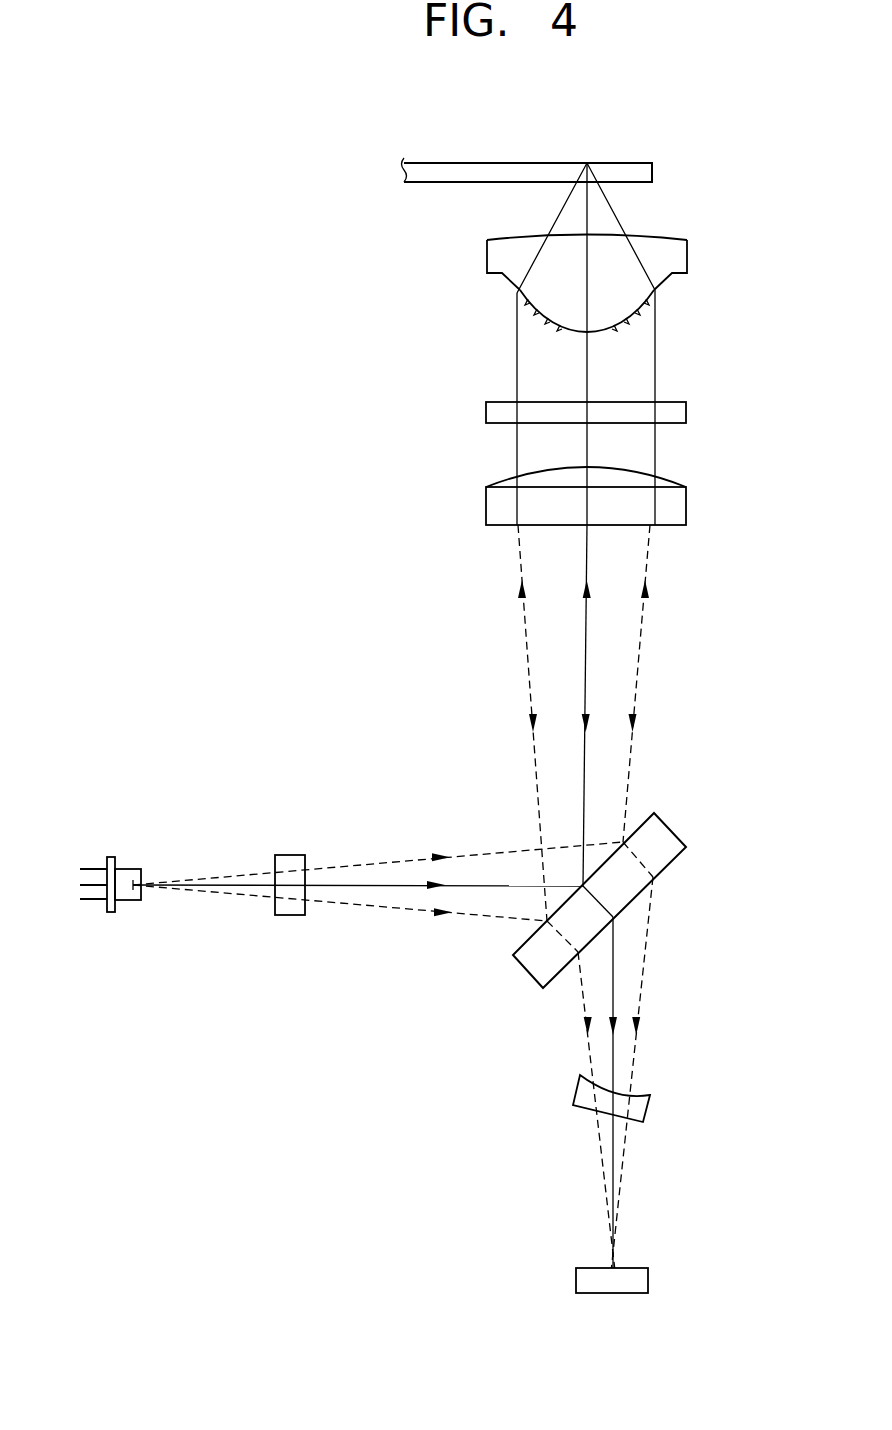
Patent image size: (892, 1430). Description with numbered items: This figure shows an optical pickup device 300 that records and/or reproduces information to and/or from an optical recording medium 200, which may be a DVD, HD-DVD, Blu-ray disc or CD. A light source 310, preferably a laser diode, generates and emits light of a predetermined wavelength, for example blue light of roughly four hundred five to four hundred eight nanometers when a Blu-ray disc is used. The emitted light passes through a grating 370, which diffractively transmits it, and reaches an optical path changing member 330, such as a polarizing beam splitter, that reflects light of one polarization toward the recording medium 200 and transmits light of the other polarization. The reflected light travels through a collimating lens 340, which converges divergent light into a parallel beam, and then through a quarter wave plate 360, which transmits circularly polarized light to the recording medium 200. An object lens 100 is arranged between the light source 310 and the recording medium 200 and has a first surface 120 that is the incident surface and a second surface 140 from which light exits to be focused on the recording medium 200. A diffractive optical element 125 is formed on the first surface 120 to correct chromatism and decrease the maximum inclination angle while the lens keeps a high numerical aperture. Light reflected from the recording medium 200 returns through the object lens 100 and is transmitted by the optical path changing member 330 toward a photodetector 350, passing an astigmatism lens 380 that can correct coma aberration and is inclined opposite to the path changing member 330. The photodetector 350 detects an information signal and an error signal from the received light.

The optical pickup device 300 is at (316, 163).
The optical recording medium 200 is at (652, 170).
The object lens 100 is at (642, 294).
The second surface 140 is at (652, 240).
The first surface 120 is at (665, 288).
The diffractive optical element 125 is at (624, 318).
The quarter wave plate 360 is at (686, 412).
The collimating lens 340 is at (686, 505).
The optical path changing member 330 is at (668, 840).
The astigmatism lens 380 is at (650, 1107).
The photodetector 350 is at (648, 1280).
The light source 310 is at (130, 868).
The grating 370 is at (292, 855).